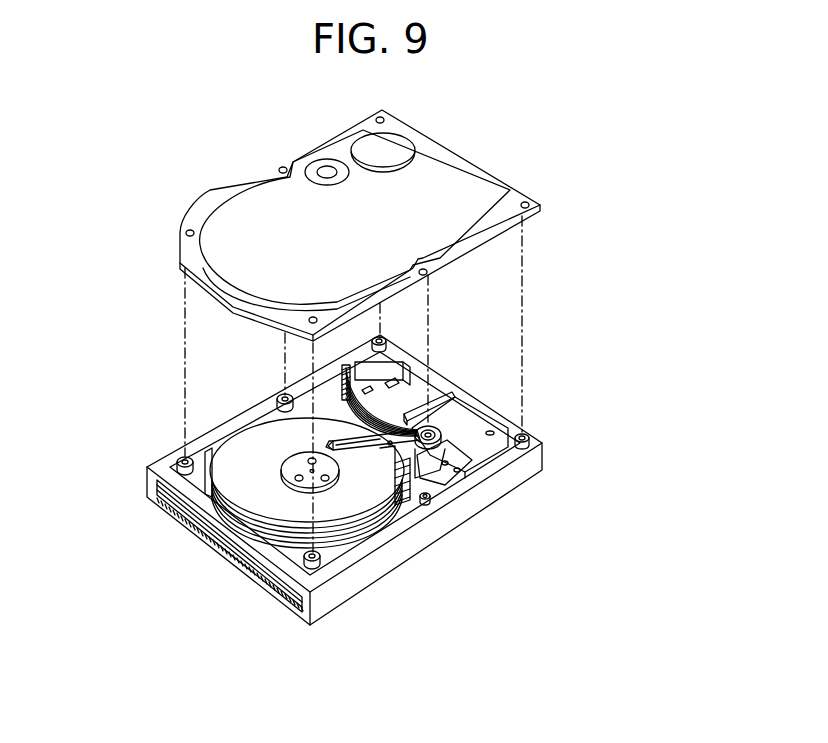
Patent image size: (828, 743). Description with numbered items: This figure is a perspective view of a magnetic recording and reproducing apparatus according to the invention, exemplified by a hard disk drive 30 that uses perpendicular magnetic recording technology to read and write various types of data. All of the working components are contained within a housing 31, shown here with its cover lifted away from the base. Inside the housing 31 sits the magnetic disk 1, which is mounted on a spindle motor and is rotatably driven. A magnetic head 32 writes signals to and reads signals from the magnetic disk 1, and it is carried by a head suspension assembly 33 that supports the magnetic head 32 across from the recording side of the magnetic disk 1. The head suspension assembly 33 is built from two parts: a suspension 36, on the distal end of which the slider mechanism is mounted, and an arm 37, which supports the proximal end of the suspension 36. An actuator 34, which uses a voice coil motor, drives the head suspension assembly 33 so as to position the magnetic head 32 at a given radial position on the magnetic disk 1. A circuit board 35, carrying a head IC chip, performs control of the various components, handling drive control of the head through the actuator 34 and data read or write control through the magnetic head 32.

The magnetic disk 1 is at (258, 457).
The hard disk drive 30 is at (157, 212).
The housing 31 is at (543, 458).
The magnetic head 32 is at (325, 445).
The head suspension assembly 33 is at (445, 447).
The actuator 34 is at (477, 430).
The circuit board 35 is at (412, 400).
The suspension 36 is at (354, 448).
The arm 37 is at (389, 452).